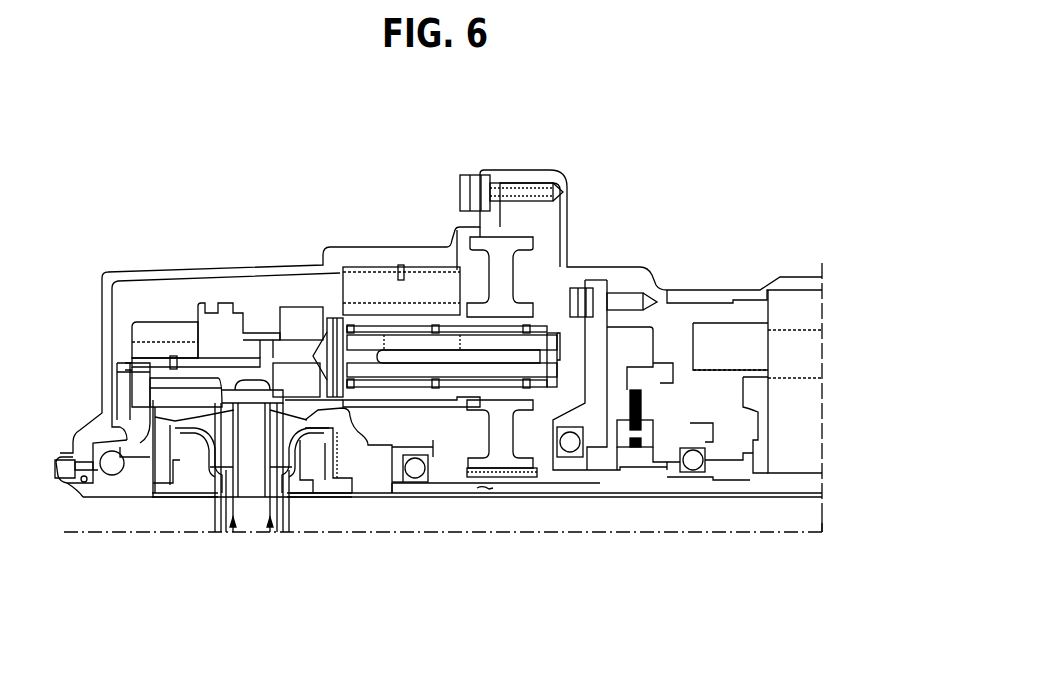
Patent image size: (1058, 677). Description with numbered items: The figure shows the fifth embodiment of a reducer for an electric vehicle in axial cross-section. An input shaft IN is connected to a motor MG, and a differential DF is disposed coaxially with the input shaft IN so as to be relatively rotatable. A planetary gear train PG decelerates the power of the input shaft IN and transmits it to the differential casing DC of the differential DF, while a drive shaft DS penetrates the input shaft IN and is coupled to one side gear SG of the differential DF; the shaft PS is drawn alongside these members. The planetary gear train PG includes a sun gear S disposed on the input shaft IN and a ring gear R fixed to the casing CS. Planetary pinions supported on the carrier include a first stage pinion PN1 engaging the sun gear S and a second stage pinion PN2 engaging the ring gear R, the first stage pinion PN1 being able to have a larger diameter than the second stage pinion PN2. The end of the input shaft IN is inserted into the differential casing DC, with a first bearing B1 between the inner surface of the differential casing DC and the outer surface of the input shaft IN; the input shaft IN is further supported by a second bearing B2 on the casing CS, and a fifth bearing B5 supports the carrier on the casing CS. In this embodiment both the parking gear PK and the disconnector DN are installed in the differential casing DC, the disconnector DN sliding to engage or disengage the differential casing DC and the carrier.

The parking gear PK is at (156, 330).
The disconnector DN is at (220, 330).
The ring gear R is at (368, 290).
The first stage pinion PN1 is at (470, 235).
The planetary gear train PG is at (523, 275).
The casing CS is at (640, 270).
The motor MG is at (783, 415).
The differential casing DC is at (150, 437).
The differential DF is at (201, 504).
The pinion shaft PS is at (252, 508).
The side gear SG is at (318, 480).
The second stage pinion PN2 is at (387, 405).
The first bearing B1 is at (418, 480).
The input shaft IN is at (483, 489).
The sun gear S is at (549, 478).
The fifth bearing B5 is at (574, 452).
The second bearing B2 is at (692, 472).
The drive shaft DS is at (790, 516).